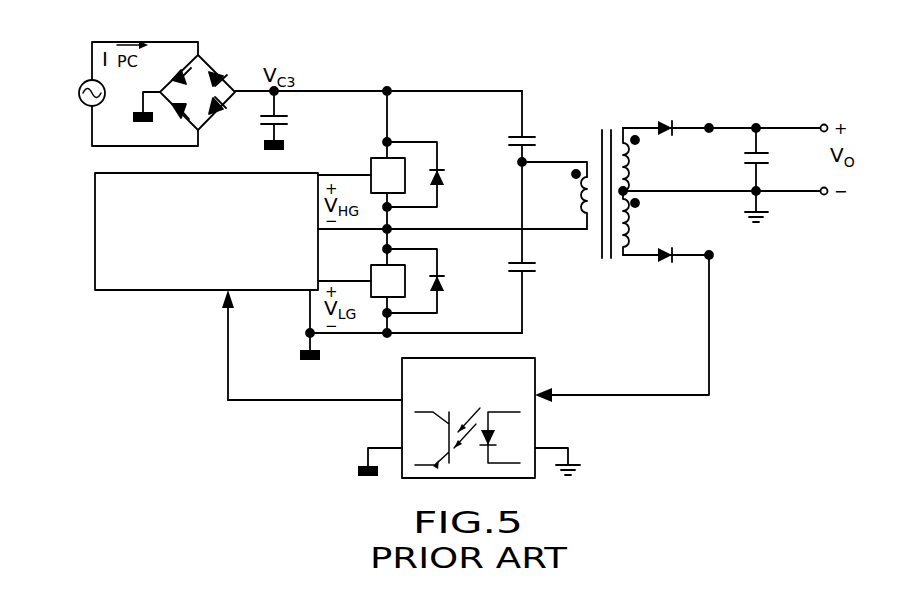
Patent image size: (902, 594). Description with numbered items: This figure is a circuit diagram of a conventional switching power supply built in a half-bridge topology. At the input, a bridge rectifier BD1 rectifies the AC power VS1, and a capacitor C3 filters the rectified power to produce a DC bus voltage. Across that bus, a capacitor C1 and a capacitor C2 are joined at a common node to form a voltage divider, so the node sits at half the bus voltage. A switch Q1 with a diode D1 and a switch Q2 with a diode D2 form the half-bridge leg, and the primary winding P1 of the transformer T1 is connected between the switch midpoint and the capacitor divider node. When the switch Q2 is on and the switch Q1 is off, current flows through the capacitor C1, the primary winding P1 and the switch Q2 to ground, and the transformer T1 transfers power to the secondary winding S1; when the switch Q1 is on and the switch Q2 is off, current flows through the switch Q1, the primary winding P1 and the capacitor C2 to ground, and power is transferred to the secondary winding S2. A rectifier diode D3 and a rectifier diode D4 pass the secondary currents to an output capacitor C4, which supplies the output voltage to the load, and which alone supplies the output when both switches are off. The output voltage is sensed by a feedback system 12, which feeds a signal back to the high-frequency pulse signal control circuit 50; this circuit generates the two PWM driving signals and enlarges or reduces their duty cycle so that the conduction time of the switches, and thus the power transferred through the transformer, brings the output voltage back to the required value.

The high-frequency pulse signal control circuit 50 is at (148, 285).
The feedback system 12 is at (532, 370).
The AC power VS1 is at (112, 94).
The bridge rectifier BD1 is at (193, 72).
The capacitor C3 is at (286, 120).
The switch Q1 is at (362, 175).
The diode D1 is at (430, 174).
The switch Q2 is at (362, 283).
The diode D2 is at (430, 281).
The capacitor C1 is at (501, 141).
The capacitor C2 is at (502, 270).
The transformer T1 is at (589, 177).
The primary winding P1 is at (554, 195).
The secondary winding S1 is at (640, 159).
The secondary winding S2 is at (640, 223).
The rectifier diode D3 is at (665, 114).
The rectifier diode D4 is at (665, 269).
The capacitor C4 is at (769, 175).